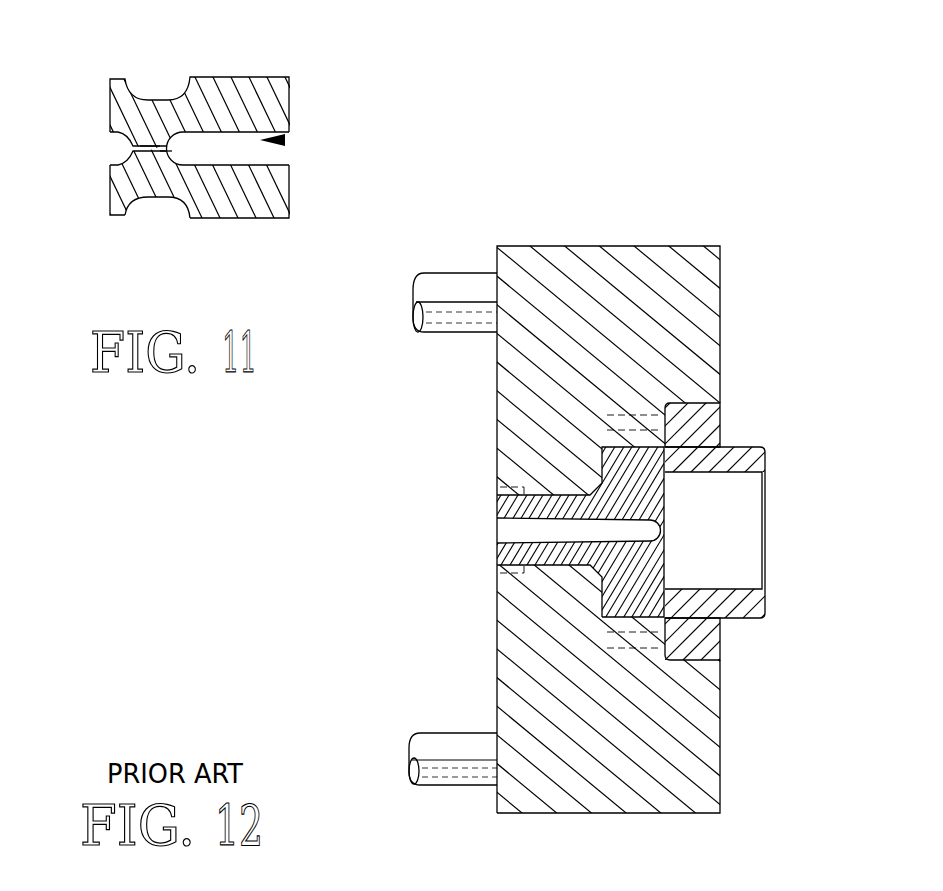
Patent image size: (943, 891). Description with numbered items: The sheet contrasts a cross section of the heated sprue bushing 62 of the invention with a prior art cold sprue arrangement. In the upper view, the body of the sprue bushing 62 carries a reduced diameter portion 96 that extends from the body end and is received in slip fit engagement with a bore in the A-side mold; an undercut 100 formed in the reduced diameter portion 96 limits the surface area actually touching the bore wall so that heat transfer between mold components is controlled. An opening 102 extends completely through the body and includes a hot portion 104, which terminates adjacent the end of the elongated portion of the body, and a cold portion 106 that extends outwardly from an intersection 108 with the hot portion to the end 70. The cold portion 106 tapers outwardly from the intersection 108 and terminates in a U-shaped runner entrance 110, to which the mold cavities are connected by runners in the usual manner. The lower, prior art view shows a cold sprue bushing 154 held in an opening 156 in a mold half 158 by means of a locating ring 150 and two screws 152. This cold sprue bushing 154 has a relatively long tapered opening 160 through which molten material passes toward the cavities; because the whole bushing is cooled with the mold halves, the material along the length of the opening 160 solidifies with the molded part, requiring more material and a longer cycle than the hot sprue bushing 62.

In FIG. 11, the sprue bushing 62 is at (226, 225).
In FIG. 11, the end 70 is at (110, 117).
In FIG. 11, the reduced diameter portion 96 is at (117, 218).
In FIG. 11, the undercut 100 is at (160, 218).
In FIG. 11, the opening 102 is at (282, 140).
In FIG. 11, the hot portion 104 is at (267, 156).
In FIG. 11, the cold portion 106 is at (149, 148).
In FIG. 11, the intersection 108 is at (168, 148).
In FIG. 11, the U-shaped runner entrance 110 is at (123, 149).
In FIG. 12, the locating ring 150 is at (768, 456).
In FIG. 12, the screws 152 is at (718, 423).
In FIG. 12, the cold sprue bushing 154 is at (482, 505).
In FIG. 12, the opening 156 is at (520, 560).
In FIG. 12, the mold half 158 is at (622, 247).
In FIG. 12, the tapered opening 160 is at (518, 534).